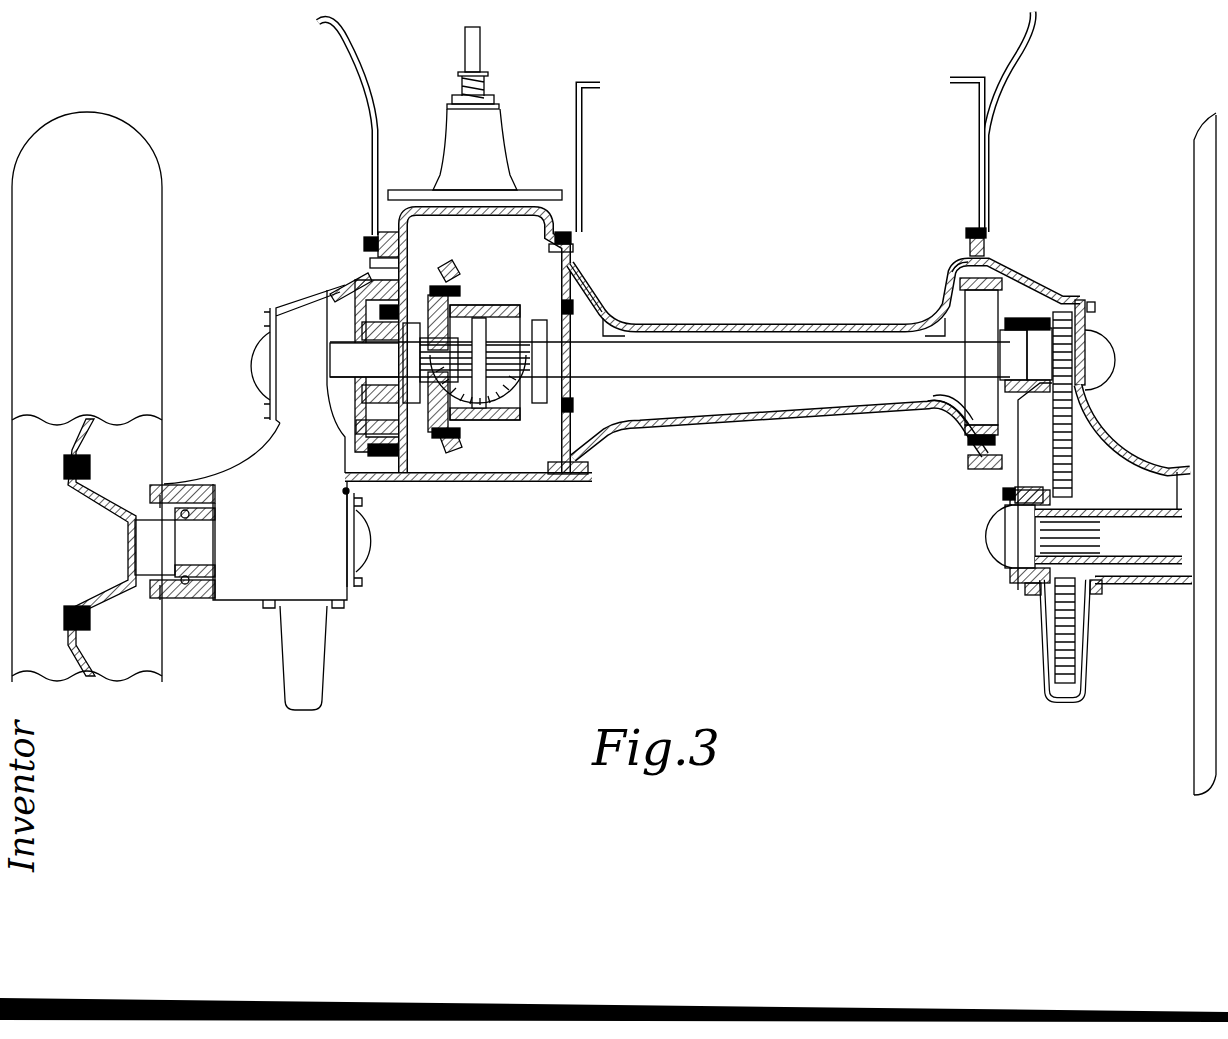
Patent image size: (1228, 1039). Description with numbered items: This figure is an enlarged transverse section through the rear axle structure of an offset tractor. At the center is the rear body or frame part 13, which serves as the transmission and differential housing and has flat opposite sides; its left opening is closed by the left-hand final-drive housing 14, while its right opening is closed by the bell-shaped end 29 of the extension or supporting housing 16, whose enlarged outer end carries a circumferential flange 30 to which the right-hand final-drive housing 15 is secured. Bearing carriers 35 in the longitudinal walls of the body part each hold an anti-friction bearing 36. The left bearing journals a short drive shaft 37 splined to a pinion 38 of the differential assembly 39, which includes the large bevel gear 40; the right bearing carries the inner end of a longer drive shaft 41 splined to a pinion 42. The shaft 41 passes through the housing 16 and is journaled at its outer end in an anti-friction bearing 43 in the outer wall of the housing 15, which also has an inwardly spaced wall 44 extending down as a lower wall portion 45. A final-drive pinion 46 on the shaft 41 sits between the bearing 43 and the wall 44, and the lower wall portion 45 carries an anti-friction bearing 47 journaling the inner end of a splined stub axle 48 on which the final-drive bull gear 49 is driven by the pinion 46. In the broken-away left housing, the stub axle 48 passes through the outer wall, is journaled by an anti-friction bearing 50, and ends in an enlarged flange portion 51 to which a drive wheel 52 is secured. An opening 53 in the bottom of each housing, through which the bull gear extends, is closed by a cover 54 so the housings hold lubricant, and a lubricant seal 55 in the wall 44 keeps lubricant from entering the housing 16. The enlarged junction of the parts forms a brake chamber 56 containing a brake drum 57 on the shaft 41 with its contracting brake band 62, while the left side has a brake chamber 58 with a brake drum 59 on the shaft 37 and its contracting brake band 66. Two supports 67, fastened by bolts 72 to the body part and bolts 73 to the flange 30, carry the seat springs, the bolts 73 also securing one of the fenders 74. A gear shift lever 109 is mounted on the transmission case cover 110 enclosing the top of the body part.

The rear body or frame part 13 is at (565, 485).
The left-hand final-drive housing 14 is at (345, 590).
The right-hand final-drive housing 15 is at (1092, 418).
The extension or supporting housing 16 is at (758, 428).
The bell-shaped end 29 is at (585, 285).
The circumferential flange 30 is at (590, 482).
The bearing carrier 35 is at (432, 430).
The anti-friction bearing 36 is at (411, 403).
The short drive shaft 37 is at (325, 345).
The pinion 38 is at (455, 318).
The differential assembly 39 is at (480, 424).
The large bevel gear 40 is at (446, 272).
The drive shaft 41 is at (725, 340).
The pinion 42 is at (515, 325).
The anti-friction bearing 43 is at (1092, 332).
The inwardly spaced wall 44 is at (1040, 300).
The lower wall portion 45 is at (345, 492).
The final-drive pinion 46 is at (1068, 312).
The anti-friction bearing 47 is at (1012, 565).
The stub axle 48 is at (214, 565).
The final-drive bull gear 49 is at (1075, 456).
The anti-friction bearing 50 is at (185, 600).
The enlarged flange portion 51 is at (92, 466).
The drive wheel 52 is at (162, 364).
The opening 53 is at (1033, 595).
The cover 54 is at (315, 677).
The lubricant seal 55 is at (1032, 322).
The brake chamber 56 is at (940, 412).
The brake drum 57 is at (968, 314).
The brake chamber 58 is at (365, 290).
The brake drum 59 is at (349, 330).
The contracting brake band 62 is at (960, 268).
The contracting brake band 66 is at (365, 462).
The support 67 is at (582, 138).
The bolt 72 is at (574, 240).
The bolt 73 is at (968, 230).
The fender 74 is at (378, 95).
The gear shift lever 109 is at (482, 40).
The transmission case cover 110 is at (522, 190).